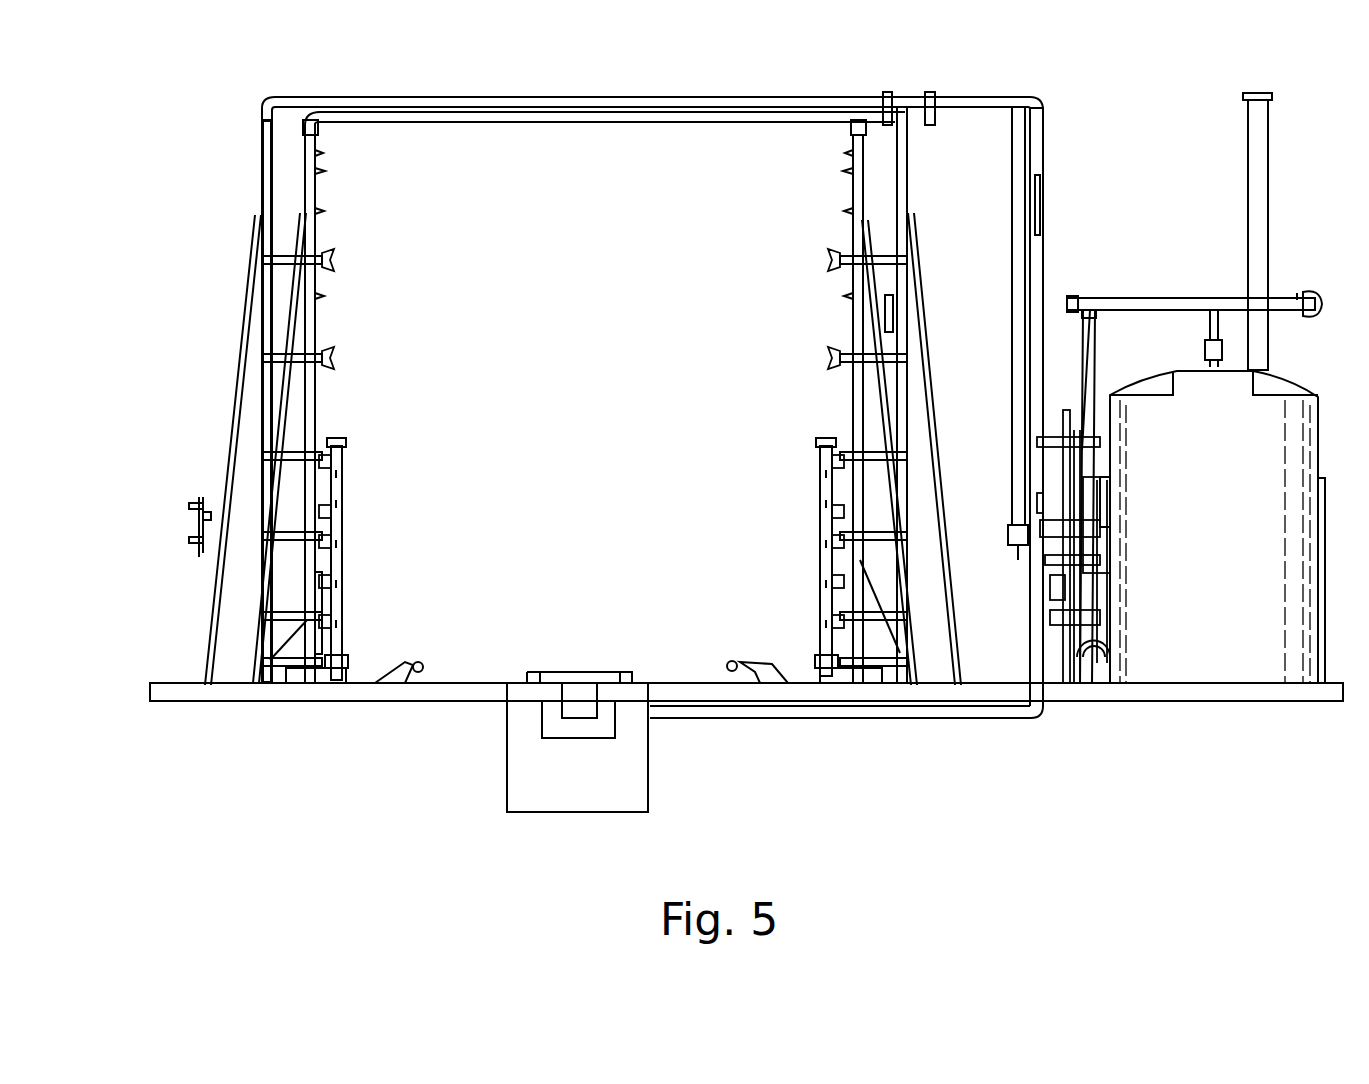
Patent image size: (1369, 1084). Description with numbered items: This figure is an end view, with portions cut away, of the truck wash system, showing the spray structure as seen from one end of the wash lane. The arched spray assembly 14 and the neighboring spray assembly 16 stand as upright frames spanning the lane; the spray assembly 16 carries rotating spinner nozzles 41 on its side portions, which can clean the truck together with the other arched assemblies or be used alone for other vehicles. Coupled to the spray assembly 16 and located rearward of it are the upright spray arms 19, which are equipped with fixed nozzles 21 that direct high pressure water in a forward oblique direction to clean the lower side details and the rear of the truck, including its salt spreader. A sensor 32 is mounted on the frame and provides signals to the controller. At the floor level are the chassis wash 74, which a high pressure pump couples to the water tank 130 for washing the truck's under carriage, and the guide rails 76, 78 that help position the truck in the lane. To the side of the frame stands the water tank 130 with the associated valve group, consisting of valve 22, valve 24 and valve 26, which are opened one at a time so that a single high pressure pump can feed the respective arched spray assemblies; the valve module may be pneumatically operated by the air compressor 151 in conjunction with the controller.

The arched spray assembly 14 is at (325, 192).
The spray assembly 16 is at (250, 190).
The upright spray arms 19 is at (343, 487).
The fixed nozzles 21 is at (332, 517).
The valve 22 is at (1088, 300).
The valve 24 is at (1123, 430).
The valve 26 is at (1223, 263).
The sensor 32 is at (195, 522).
The rotating spinner nozzles 41 is at (334, 262).
The chassis wash 74 is at (527, 672).
The guide rail 76 is at (748, 660).
The guide rail 78 is at (415, 665).
The water tank 130 is at (1193, 637).
The air compressor 151 is at (1108, 620).